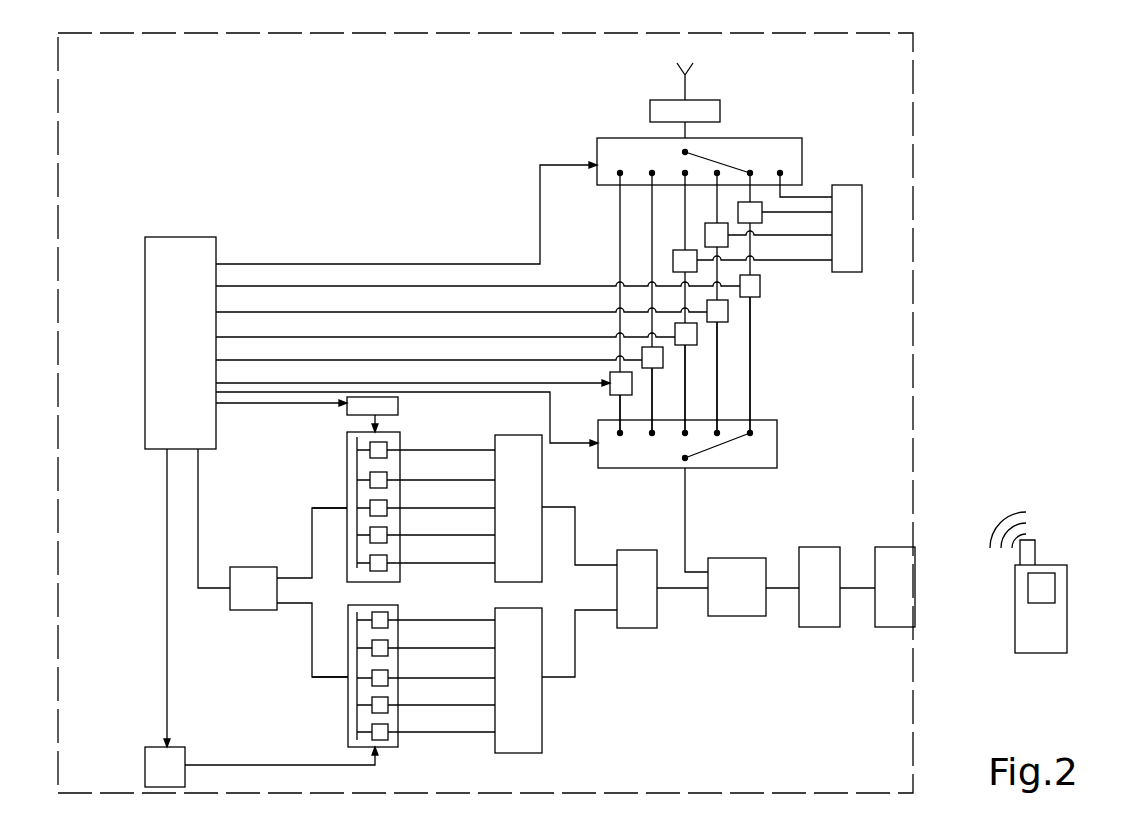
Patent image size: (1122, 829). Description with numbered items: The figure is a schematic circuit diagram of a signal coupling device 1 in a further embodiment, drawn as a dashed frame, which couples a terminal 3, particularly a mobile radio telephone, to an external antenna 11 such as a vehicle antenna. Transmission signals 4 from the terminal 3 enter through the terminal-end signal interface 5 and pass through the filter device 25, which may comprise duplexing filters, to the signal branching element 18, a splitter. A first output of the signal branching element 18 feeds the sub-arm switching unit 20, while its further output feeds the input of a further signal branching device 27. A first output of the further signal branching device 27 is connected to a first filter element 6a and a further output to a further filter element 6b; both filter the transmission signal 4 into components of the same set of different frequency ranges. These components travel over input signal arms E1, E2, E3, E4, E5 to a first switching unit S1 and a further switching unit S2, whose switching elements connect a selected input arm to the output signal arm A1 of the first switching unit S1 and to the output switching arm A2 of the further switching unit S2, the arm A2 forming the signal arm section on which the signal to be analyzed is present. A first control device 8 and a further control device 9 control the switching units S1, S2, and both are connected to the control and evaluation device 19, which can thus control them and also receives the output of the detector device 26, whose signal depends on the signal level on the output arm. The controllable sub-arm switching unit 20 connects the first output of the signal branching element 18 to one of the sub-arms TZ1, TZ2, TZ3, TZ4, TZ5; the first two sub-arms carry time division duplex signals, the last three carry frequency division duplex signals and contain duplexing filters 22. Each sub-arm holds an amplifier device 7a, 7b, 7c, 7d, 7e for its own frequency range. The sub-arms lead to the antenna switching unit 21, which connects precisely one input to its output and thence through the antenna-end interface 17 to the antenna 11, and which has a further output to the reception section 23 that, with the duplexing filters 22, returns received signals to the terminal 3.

The signal coupling device 1 is at (915, 178).
The terminal 3 is at (1068, 572).
The transmission signals 4 is at (1030, 555).
The terminal-end signal interface 5 is at (890, 547).
The first filter element 6a is at (538, 436).
The further filter element 6b is at (541, 612).
The first amplifier device 7a is at (612, 388).
The amplifier device 7b is at (656, 369).
The amplifier device 7c is at (690, 346).
The amplifier device 7d is at (716, 323).
The amplifier device 7e is at (761, 293).
The first control device 8 is at (399, 406).
The further control device 9 is at (145, 773).
The antenna 11 is at (690, 87).
The antenna-end interface 17 is at (709, 112).
The signal branching element 18 is at (733, 617).
The control and evaluation device 19 is at (178, 237).
The sub-arm switching unit 20 is at (778, 434).
The antenna switching unit 21 is at (778, 138).
The duplexing filter 22 is at (738, 210).
The reception section 23 is at (847, 185).
The filter device 25 is at (821, 547).
The detector device 26 is at (244, 567).
The further signal branching device 27 is at (631, 550).
The first switching unit S1 is at (347, 437).
The further switching unit S2 is at (350, 606).
The output signal arm A1 is at (347, 508).
The output switching arm A2 is at (312, 648).
The first input signal arm E1 is at (441, 450).
The input signal arm E2 is at (441, 480).
The input signal arm E3 is at (441, 508).
The input signal arm E4 is at (441, 535).
The input signal arm E5 is at (441, 563).
The first sub-arm TZ1 is at (620, 405).
The second sub-arm TZ2 is at (650, 395).
The third sub-arm TZ3 is at (687, 404).
The fourth sub-arm TZ4 is at (719, 376).
The fifth sub-arm TZ5 is at (751, 338).